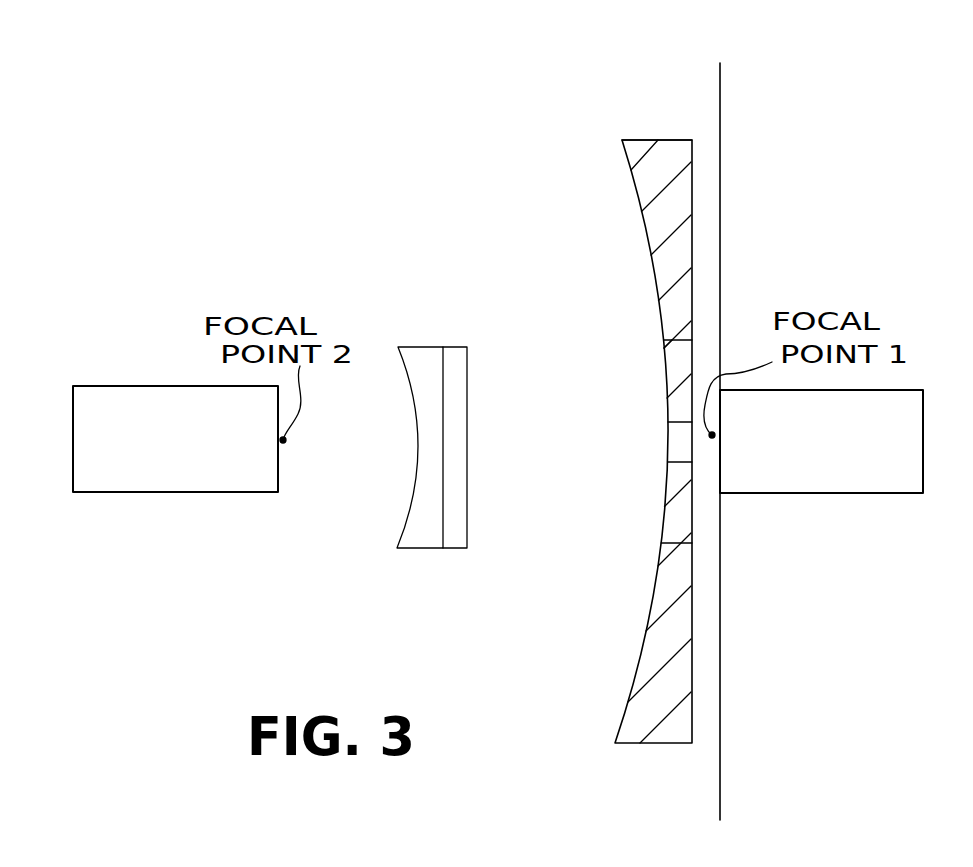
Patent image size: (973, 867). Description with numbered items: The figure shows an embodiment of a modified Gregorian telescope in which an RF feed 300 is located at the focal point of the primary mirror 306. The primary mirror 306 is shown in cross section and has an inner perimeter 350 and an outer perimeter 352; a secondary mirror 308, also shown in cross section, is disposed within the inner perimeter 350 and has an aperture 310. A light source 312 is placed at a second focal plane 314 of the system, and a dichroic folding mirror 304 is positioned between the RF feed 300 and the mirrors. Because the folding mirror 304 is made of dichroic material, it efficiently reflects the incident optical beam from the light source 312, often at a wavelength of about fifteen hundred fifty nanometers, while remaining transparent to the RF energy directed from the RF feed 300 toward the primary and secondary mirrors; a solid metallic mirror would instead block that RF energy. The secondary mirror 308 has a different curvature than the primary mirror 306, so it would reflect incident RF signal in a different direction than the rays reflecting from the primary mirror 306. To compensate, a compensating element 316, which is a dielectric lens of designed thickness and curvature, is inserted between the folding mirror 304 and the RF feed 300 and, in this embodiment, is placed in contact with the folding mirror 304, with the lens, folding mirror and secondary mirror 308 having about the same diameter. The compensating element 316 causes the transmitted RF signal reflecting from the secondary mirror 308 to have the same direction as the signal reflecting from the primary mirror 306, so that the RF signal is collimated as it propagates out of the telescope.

The RF feed 300 is at (195, 494).
The dichroic folding mirror 304 is at (458, 346).
The primary mirror 306 is at (640, 222).
The secondary mirror 308 is at (665, 506).
The aperture 310 is at (672, 461).
The light source 312 is at (852, 495).
The second focal plane 314 is at (722, 153).
The compensating element 316 is at (418, 346).
The inner perimeter 350 is at (670, 338).
The outer perimeter 352 is at (660, 138).